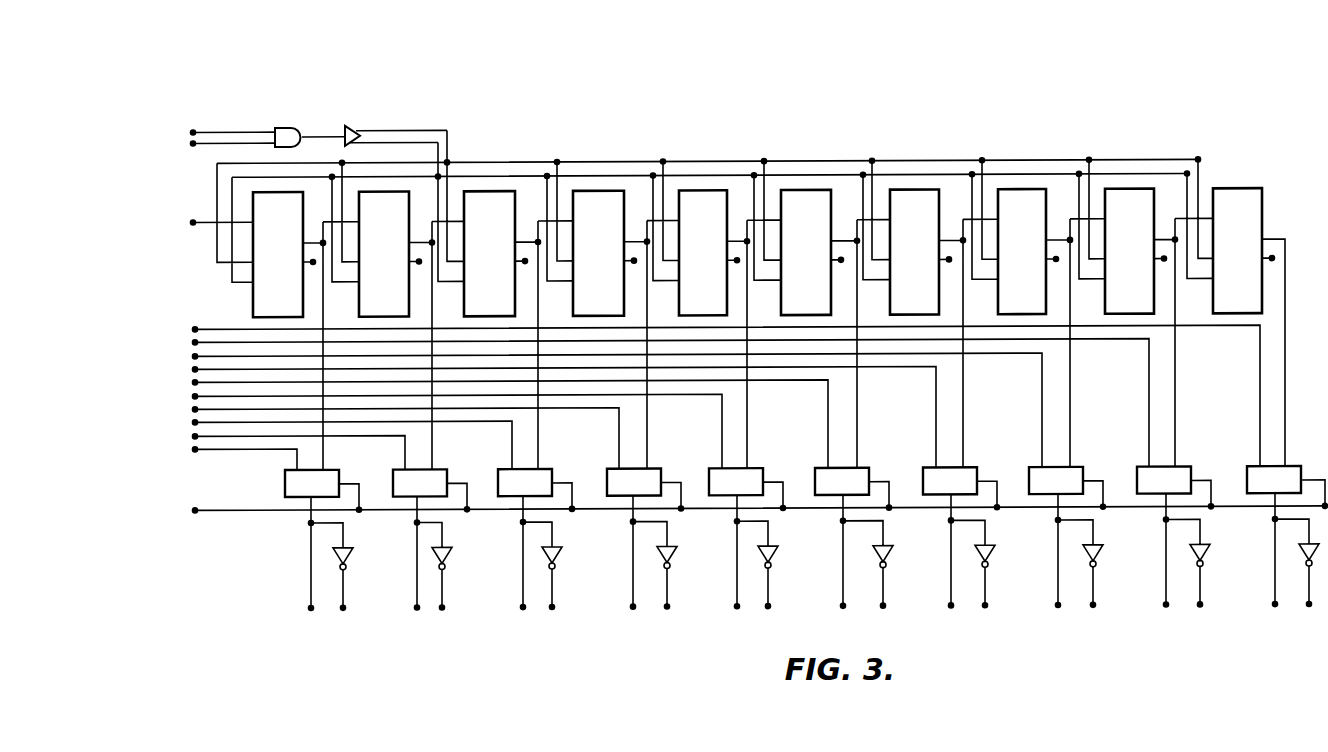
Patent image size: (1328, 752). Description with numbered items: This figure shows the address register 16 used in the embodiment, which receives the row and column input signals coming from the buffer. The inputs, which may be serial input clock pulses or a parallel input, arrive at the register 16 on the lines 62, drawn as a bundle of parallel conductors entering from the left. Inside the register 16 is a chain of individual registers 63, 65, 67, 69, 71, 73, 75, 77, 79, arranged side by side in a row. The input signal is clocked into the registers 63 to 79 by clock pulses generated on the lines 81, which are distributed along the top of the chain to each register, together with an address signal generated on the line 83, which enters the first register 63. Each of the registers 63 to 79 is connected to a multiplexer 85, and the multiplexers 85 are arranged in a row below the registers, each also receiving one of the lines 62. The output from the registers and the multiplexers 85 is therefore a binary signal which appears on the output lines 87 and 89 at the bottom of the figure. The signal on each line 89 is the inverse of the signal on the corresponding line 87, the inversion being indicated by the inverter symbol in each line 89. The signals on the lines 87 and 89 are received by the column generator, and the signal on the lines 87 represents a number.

The register 16 is at (1052, 97).
The lines 62 is at (186, 320).
The register 63 is at (289, 331).
The register 65 is at (379, 315).
The register 67 is at (486, 299).
The register 69 is at (594, 314).
The register 71 is at (698, 314).
The register 73 is at (911, 313).
The register 75 is at (1018, 312).
The register 77 is at (1124, 312).
The register 79 is at (1230, 312).
The lines 81 is at (399, 143).
The line 83 is at (197, 224).
The multiplexer 85 is at (395, 470).
The output lines 87 is at (311, 566).
The output lines 89 is at (344, 542).